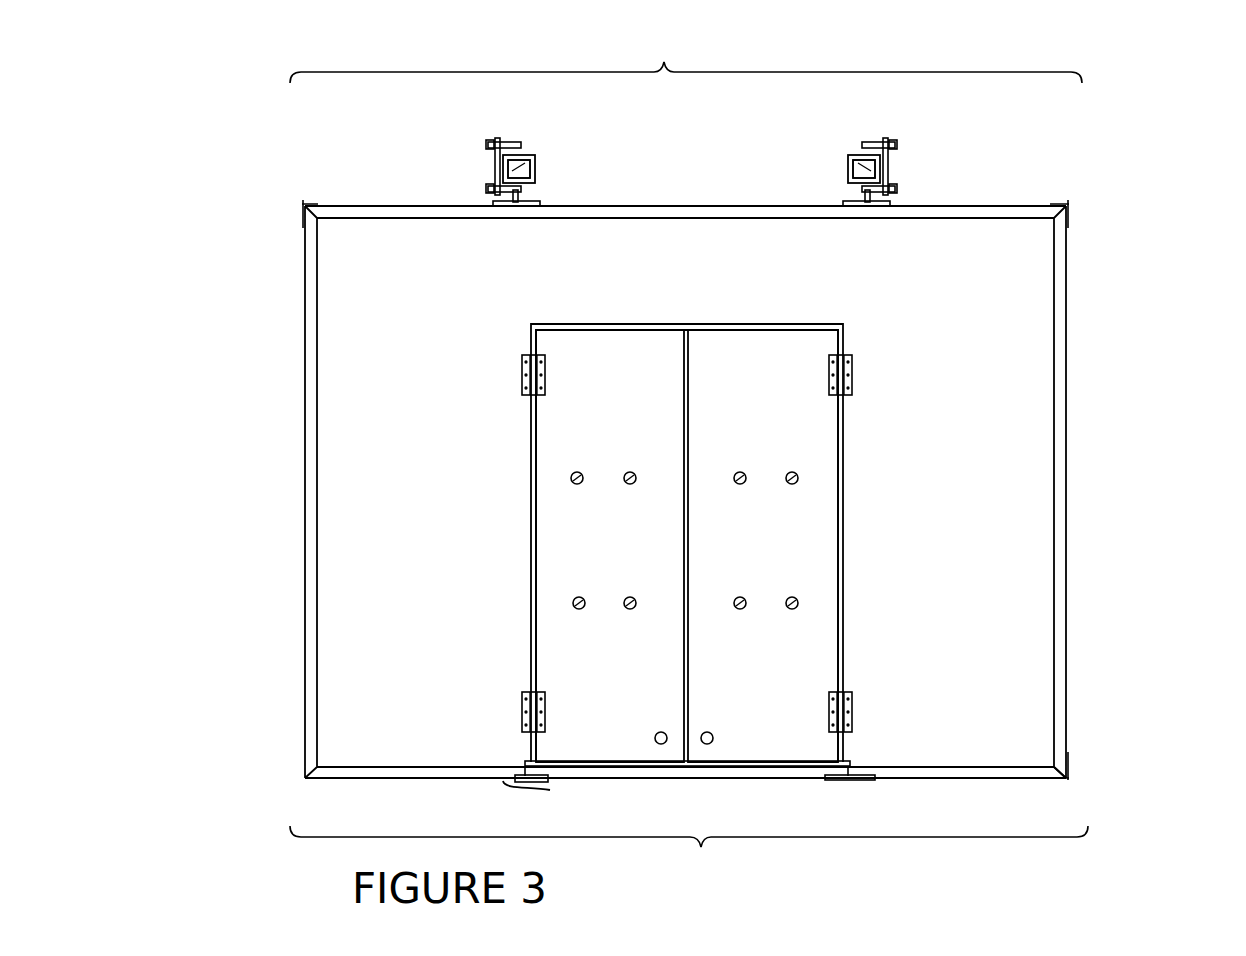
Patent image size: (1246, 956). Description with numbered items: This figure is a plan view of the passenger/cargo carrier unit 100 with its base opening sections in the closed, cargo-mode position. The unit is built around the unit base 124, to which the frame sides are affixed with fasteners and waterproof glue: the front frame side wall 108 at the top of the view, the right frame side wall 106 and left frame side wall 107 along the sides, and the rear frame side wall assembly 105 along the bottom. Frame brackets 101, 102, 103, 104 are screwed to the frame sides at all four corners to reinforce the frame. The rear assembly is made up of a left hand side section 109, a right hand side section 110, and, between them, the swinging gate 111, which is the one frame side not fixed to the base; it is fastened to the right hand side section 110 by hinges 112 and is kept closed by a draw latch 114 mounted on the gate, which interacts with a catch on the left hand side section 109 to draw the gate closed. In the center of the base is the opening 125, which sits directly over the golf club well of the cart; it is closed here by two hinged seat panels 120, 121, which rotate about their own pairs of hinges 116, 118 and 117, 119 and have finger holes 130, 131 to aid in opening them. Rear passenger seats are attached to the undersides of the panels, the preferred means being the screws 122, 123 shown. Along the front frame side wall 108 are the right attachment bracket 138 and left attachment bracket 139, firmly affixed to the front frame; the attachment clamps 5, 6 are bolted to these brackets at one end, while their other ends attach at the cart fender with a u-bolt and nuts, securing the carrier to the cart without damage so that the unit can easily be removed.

The enclosure assembly 100 is at (686, 51).
The left camera 5 is at (534, 154).
The right camera 6 is at (850, 154).
The left attachment bracket 139 is at (537, 183).
The right attachment bracket 138 is at (847, 185).
The front frame side wall 108 is at (696, 205).
The frame bracket 101 is at (305, 218).
The frame bracket 102 is at (1066, 214).
The frame bracket 103 is at (305, 767).
The frame bracket 104 is at (1066, 768).
The rear frame side wall assembly 105 is at (689, 857).
The right frame side wall 106 is at (1056, 480).
The left frame side wall 107 is at (305, 490).
The left hand rear frame side section 109 is at (425, 778).
The right hand rear frame side section 110 is at (960, 775).
The swinging gate 111 is at (692, 778).
The hinge set 112 is at (840, 778).
The draw latch 114 is at (548, 790).
The hinge 116 is at (852, 372).
The hinge 117 is at (522, 372).
The hinge 118 is at (852, 712).
The hinge 119 is at (522, 712).
The hinged seat panel 120 is at (763, 546).
The hinged seat panel 121 is at (610, 546).
The screws 122 is at (790, 598).
The screws 123 is at (626, 598).
The unit base 124 is at (683, 254).
The opening 125 is at (745, 324).
The finger hole 130 is at (711, 732).
The finger hole 131 is at (656, 733).